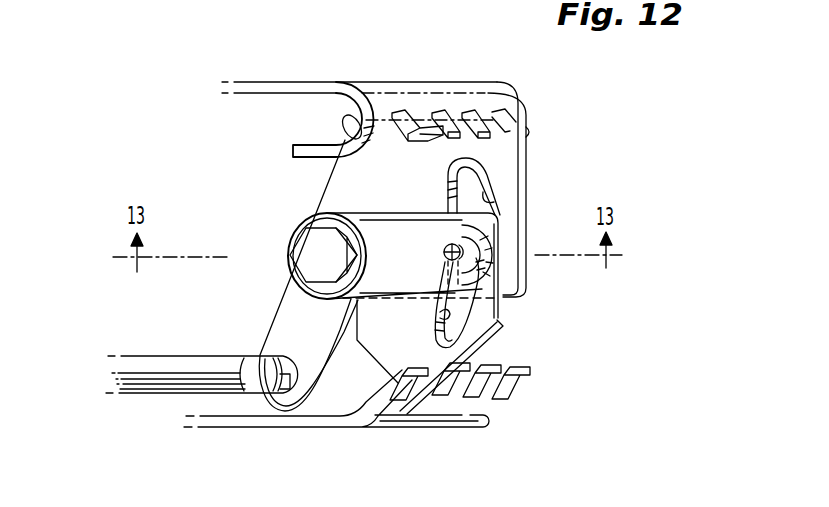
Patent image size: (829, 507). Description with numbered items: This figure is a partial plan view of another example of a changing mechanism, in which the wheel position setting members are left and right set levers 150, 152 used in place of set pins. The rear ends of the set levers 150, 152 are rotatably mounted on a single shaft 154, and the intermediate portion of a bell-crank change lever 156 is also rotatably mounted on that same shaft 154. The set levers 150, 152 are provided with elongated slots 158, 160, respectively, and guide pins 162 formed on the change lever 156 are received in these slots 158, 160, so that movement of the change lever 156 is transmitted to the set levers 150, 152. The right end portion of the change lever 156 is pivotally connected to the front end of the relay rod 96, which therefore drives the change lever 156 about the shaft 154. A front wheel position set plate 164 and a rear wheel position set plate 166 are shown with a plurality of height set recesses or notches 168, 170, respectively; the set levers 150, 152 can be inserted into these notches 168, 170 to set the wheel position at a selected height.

The relay rod 96 is at (167, 355).
The left set lever 150 is at (527, 152).
The right set lever 152 is at (500, 318).
The shaft 154 is at (295, 250).
The bell-crank change lever 156 is at (284, 290).
The elongated slot 158 is at (494, 200).
The elongated slot 160 is at (440, 314).
The guide pin 162 is at (446, 250).
The front wheel position set plate 164 is at (412, 81).
The rear wheel position set plate 166 is at (442, 418).
The height set recesses or notches 168 is at (450, 110).
The height set recesses or notches 170 is at (505, 389).